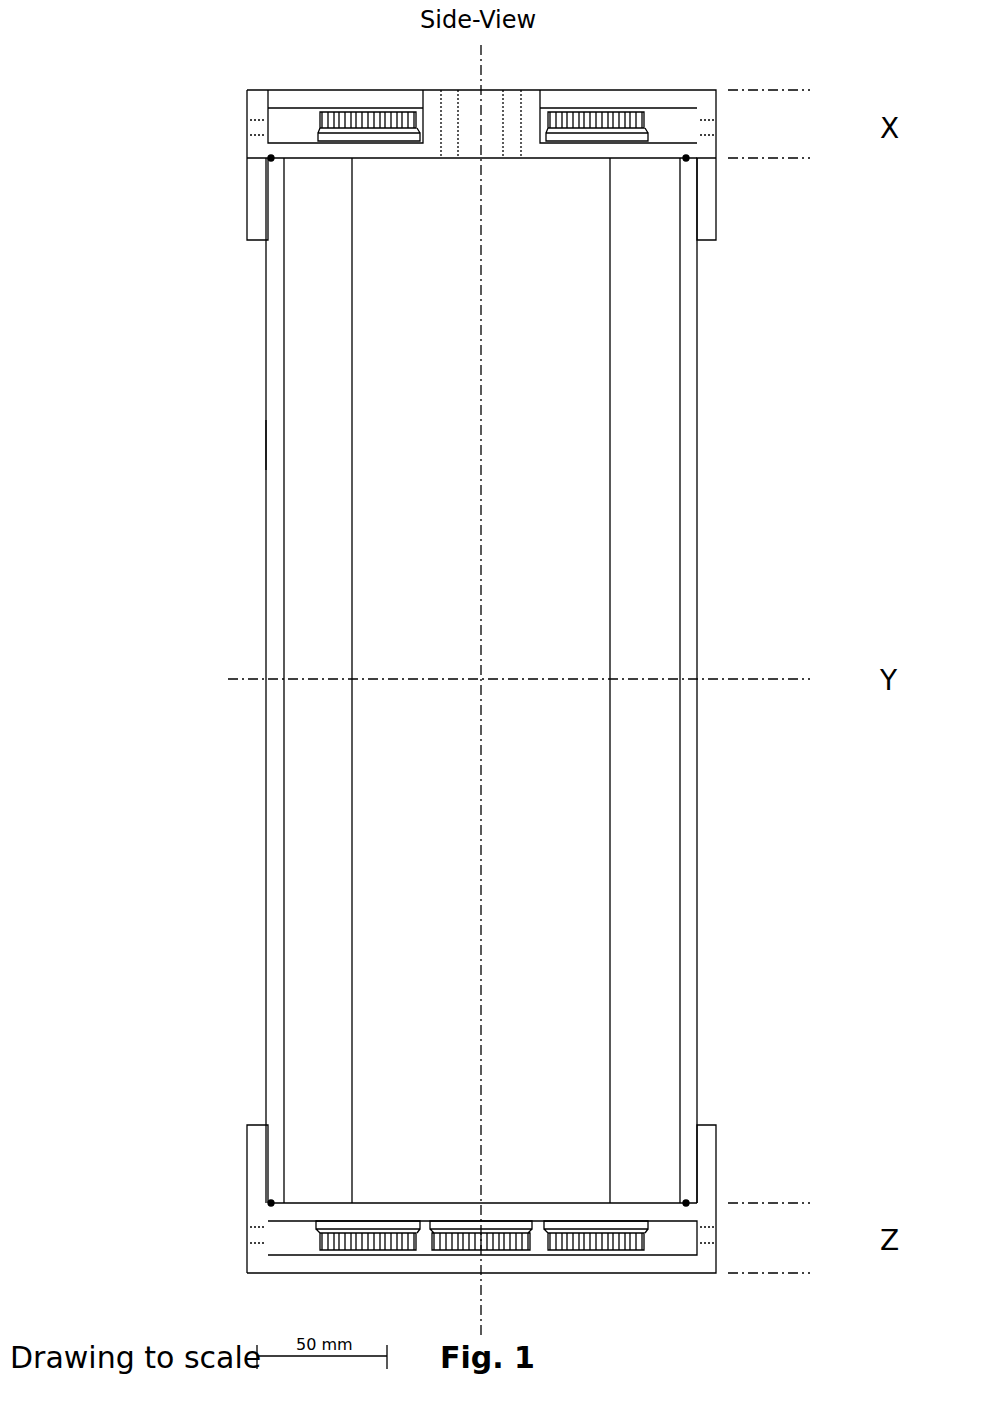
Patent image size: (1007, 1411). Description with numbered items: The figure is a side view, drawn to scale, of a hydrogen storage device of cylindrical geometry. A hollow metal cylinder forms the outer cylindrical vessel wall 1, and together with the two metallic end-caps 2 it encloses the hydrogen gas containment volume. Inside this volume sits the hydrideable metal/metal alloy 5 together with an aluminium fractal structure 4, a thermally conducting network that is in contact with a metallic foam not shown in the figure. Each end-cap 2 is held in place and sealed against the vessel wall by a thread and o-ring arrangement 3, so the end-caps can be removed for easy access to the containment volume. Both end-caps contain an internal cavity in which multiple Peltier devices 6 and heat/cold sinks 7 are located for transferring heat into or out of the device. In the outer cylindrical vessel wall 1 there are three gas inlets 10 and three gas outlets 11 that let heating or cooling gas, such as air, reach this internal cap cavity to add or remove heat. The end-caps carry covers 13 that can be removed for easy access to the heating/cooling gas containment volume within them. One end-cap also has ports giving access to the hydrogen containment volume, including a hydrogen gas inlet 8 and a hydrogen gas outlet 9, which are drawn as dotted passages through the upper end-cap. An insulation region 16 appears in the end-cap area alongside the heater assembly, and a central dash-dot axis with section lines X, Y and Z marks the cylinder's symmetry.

The outer cylindrical vessel wall 1 is at (270, 563).
The end-cap 2 is at (258, 166).
The thread and o-ring arrangement 3 is at (271, 156).
The aluminium fractal structure 4 is at (408, 388).
The hydrideable metal/metal alloy 5 is at (312, 452).
The Peltier device 6 is at (318, 140).
The heat/cold sink 7 is at (365, 120).
The hydrogen gas inlet 8 is at (455, 100).
The hydrogen gas outlet 9 is at (510, 100).
The gas inlet 10 is at (258, 128).
The gas outlet 11 is at (710, 124).
The cover 13 is at (548, 100).
The insulation 16 is at (292, 118).